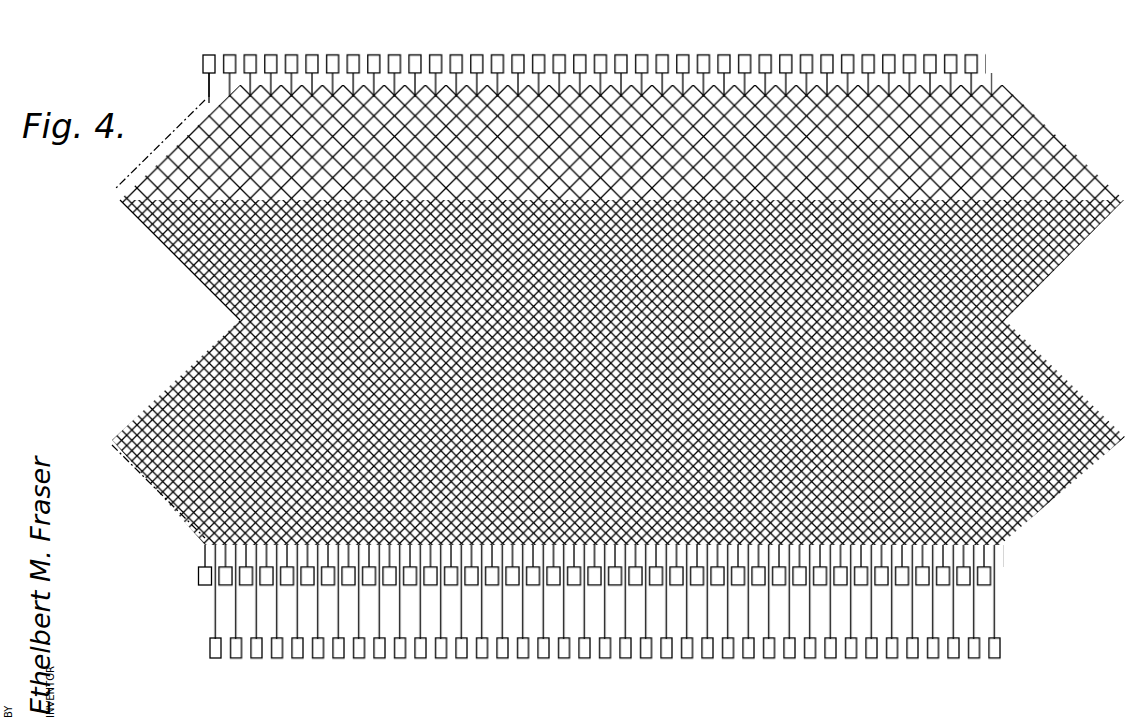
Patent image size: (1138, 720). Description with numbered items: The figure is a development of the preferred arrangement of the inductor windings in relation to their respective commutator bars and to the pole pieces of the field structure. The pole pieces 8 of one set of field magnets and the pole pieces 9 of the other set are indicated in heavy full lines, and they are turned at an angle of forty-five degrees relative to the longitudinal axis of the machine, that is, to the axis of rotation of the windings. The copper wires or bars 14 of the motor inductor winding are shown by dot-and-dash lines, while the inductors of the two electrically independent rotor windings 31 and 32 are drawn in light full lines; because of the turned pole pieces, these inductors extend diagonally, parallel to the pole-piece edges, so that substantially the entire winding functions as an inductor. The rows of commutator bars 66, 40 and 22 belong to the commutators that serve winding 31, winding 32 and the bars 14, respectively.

The pole pieces 8 is at (134, 188).
The pole pieces 9 is at (162, 488).
The commutator bars 66 is at (203, 65).
The inductor winding 31 is at (203, 100).
The copper wires or bars 14 is at (235, 303).
The inductor winding 32 is at (124, 452).
The commutator bars 40 is at (201, 585).
The commutator bars 22 is at (217, 658).